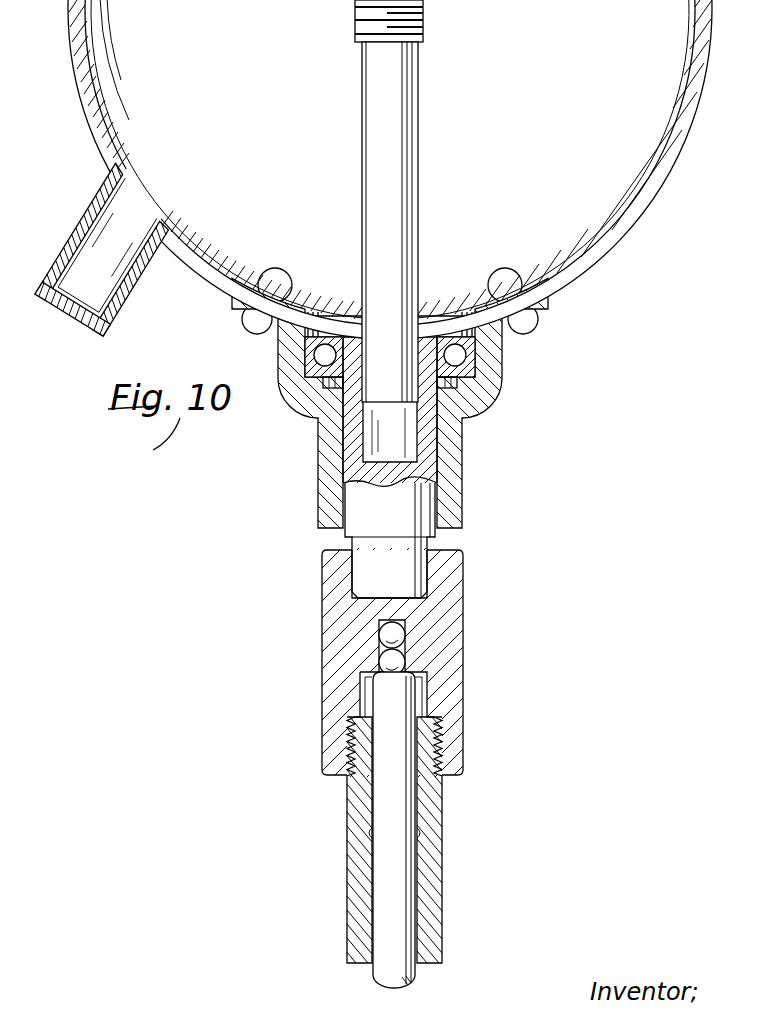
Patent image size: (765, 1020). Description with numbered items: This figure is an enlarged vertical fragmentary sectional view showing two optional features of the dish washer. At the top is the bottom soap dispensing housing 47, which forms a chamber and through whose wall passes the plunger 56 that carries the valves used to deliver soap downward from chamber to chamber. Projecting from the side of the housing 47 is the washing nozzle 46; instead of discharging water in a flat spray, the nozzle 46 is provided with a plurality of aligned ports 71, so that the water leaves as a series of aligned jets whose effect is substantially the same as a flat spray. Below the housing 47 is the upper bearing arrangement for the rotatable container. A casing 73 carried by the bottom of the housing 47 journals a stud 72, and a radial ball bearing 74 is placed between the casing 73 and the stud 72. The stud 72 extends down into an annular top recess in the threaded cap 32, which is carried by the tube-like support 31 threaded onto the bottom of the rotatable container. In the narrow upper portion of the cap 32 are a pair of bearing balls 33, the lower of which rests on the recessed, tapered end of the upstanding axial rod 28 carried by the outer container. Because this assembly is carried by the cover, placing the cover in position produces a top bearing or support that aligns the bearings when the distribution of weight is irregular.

The axial rod 28 is at (383, 795).
The tube-like support 31 is at (438, 802).
The threaded cap 32 is at (463, 608).
The bearing balls 33 is at (399, 659).
The washing nozzle 46 is at (88, 221).
The soap dispensing housing 47 is at (584, 250).
The plunger 56 is at (410, 190).
The aligned ports 71 is at (67, 325).
The stud 72 is at (425, 549).
The casing 73 is at (462, 440).
The radial ball bearing 74 is at (478, 348).